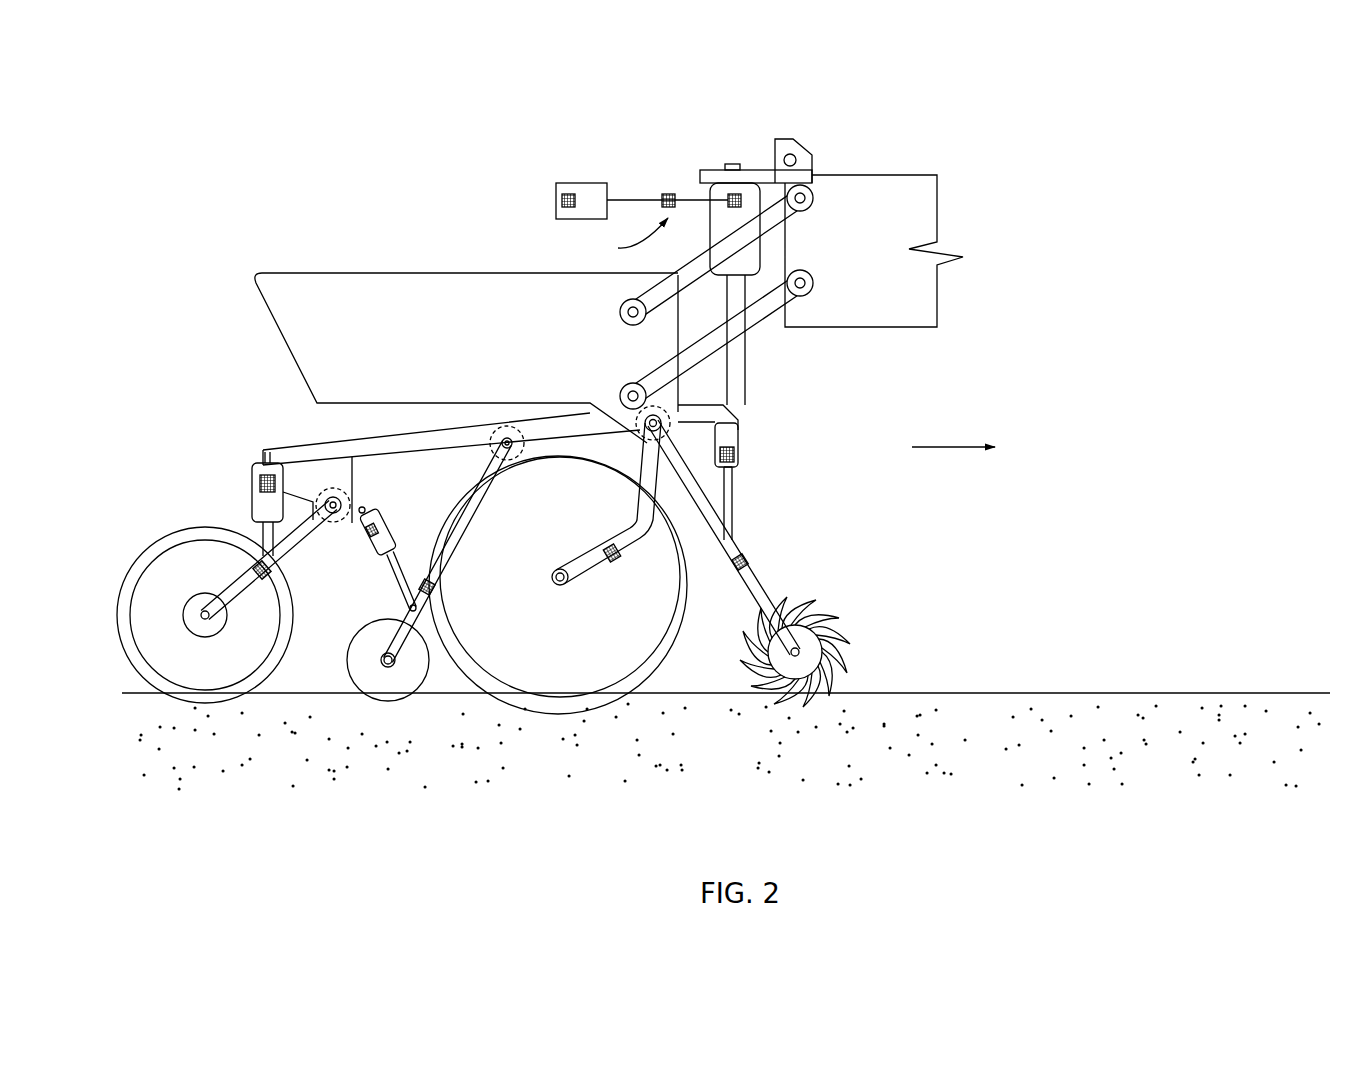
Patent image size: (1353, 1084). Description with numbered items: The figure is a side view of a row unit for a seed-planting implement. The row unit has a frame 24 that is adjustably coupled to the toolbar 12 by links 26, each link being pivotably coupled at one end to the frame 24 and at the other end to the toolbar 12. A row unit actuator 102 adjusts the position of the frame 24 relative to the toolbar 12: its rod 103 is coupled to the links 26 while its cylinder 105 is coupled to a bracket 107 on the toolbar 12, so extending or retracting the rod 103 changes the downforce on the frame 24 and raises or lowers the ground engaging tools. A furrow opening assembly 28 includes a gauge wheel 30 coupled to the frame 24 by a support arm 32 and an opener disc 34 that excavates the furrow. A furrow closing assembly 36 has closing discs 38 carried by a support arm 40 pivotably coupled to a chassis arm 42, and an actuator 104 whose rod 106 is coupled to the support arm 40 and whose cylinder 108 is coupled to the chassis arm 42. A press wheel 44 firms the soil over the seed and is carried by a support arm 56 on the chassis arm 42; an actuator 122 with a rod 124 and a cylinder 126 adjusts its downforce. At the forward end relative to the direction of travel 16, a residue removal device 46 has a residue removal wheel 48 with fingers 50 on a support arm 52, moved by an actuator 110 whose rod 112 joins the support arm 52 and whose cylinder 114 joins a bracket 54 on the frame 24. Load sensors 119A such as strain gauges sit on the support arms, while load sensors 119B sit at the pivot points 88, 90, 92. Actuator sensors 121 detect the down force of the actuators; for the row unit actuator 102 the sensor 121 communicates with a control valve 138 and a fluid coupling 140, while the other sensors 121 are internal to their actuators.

The toolbar 12 is at (845, 327).
The direction of travel 16 is at (950, 447).
The frame 24 is at (470, 273).
The links 26 is at (792, 246).
The furrow opening assembly 28 is at (692, 629).
The gauge wheel 30 is at (518, 637).
The support arm 32 is at (594, 574).
The opener disc 34 is at (510, 707).
The furrow closing assembly 36 is at (342, 637).
The closing discs 38 is at (347, 672).
The support arm 40 is at (420, 610).
The chassis arm 42 is at (292, 445).
The press wheel 44 is at (118, 620).
The residue removal device 46 is at (770, 532).
The residue removal wheel 48 is at (812, 632).
The fingers 50 is at (834, 618).
The support arm 52 is at (764, 593).
The bracket 54 is at (712, 402).
The support arm 56 is at (230, 597).
The pivot point 88 is at (631, 419).
The pivot point 90 is at (525, 422).
The pivot point 92 is at (362, 496).
The row unit actuator 102 is at (626, 237).
The rod 103 is at (722, 305).
The cylinder 105 is at (710, 235).
The bracket 107 is at (760, 168).
The cylinder 108 is at (374, 518).
The actuator 110 is at (745, 486).
The rod 112 is at (733, 513).
The cylinder 114 is at (740, 425).
The load sensor 119A is at (747, 560).
The load sensor 119B is at (490, 440).
The actuator sensor 121 is at (561, 197).
The actuator 122 is at (212, 471).
The rod 124 is at (258, 535).
The cylinder 126 is at (252, 503).
The control valve 138 is at (583, 183).
The fluid coupling 140 is at (684, 199).
The actuator 104 is at (395, 520).
The rod 106 is at (400, 580).